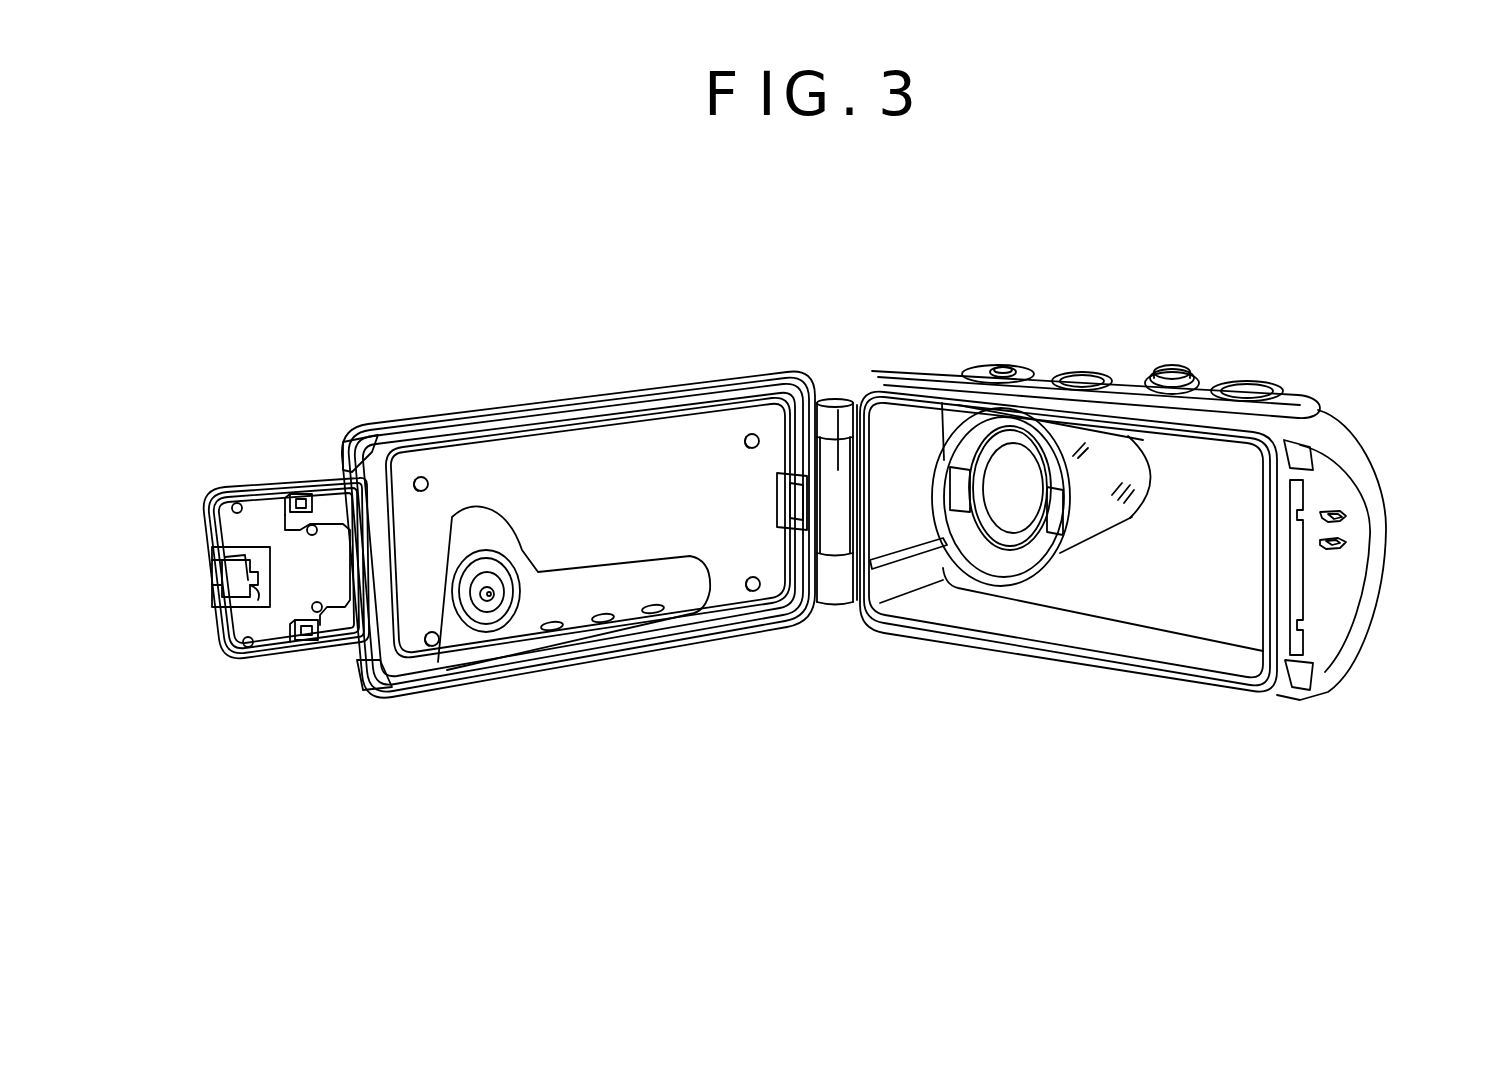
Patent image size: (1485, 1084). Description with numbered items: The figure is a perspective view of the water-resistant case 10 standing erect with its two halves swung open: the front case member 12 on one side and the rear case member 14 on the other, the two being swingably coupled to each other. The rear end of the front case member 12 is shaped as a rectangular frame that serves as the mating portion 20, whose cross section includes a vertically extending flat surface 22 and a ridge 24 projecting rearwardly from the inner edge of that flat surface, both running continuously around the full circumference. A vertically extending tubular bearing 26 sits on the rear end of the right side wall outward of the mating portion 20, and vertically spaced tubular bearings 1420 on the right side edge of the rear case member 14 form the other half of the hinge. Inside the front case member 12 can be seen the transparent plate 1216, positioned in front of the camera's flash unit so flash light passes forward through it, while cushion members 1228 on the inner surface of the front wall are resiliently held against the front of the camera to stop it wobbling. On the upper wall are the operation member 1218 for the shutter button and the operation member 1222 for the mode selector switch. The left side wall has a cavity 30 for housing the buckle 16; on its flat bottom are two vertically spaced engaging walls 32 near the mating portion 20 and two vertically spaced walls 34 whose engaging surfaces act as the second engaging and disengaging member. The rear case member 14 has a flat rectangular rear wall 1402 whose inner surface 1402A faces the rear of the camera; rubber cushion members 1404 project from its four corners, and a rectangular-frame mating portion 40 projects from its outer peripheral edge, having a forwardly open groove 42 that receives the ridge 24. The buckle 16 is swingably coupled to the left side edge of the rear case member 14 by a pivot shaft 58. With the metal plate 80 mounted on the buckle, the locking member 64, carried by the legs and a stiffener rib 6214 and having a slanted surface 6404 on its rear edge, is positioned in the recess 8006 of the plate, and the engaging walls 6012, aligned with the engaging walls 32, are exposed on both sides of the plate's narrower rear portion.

The water-resistant case 10 is at (1052, 297).
The front case member 12 is at (1290, 395).
The rear case member 14 is at (520, 385).
The buckle 16 is at (248, 478).
The mating portion 20 is at (1062, 665).
The flat surface 22 is at (1340, 557).
The ridge 24 is at (1267, 597).
The tubular bearing 26 is at (838, 467).
The cavity 30 is at (1355, 530).
The engaging walls 32 is at (1307, 503).
The walls 34 is at (1345, 510).
The mating portion 40 is at (528, 668).
The groove 42 is at (460, 680).
The pivot shaft 58 is at (333, 640).
The locking member 64 is at (210, 590).
The plate 80 is at (232, 642).
The transparent plate 1216 is at (1100, 500).
The operation member 1218 is at (1170, 372).
The operation member 1222 is at (1085, 375).
The cushion members 1228 is at (960, 452).
The rear wall 1402 is at (640, 460).
The inner surface 1402A is at (580, 455).
The cushion members 1404 is at (425, 478).
The tubular bearings 1420 is at (833, 417).
The engaging walls 6012 is at (362, 480).
The stiffener rib 6214 is at (263, 620).
The slanted surface 6404 is at (258, 550).
The recess 8006 is at (240, 638).